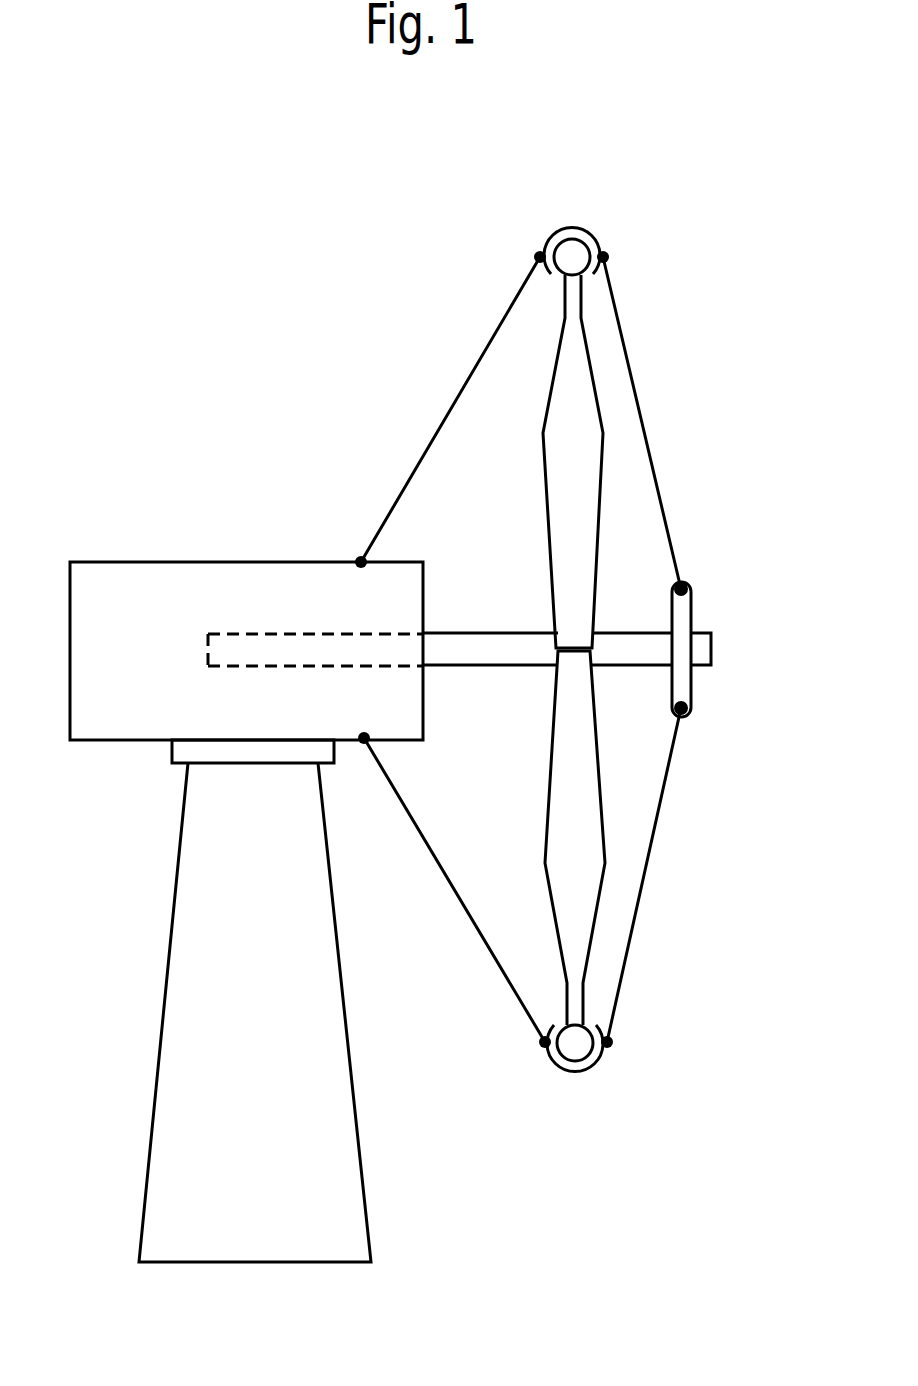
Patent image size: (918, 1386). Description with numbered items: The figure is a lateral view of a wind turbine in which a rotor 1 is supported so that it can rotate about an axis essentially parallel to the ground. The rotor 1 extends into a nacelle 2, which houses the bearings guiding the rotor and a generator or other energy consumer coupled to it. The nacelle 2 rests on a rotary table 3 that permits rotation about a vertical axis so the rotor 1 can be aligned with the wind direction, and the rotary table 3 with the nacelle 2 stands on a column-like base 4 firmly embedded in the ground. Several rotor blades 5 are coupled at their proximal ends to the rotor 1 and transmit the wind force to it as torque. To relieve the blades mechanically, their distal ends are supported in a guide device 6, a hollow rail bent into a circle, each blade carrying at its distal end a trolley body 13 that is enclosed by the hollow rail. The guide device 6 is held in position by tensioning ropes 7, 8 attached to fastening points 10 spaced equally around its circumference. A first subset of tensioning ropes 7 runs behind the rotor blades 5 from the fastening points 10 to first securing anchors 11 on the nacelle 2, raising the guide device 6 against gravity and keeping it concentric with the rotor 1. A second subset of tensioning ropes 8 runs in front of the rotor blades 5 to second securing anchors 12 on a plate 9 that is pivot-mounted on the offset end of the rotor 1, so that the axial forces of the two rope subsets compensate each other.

The rotor 1 is at (487, 650).
The nacelle 2 is at (130, 575).
The rotary table 3 is at (180, 752).
The base 4 is at (190, 938).
The rotor blade 5 is at (560, 477).
The guide device 6 is at (585, 228).
The tensioning ropes (first subset) 7 is at (464, 382).
The tensioning ropes (second subset) 8 is at (637, 390).
The plate 9 is at (683, 612).
The fastening points 10 is at (538, 256).
The first securing anchors 11 is at (360, 560).
The second securing anchors 12 is at (692, 589).
The trolley body 13 is at (572, 250).